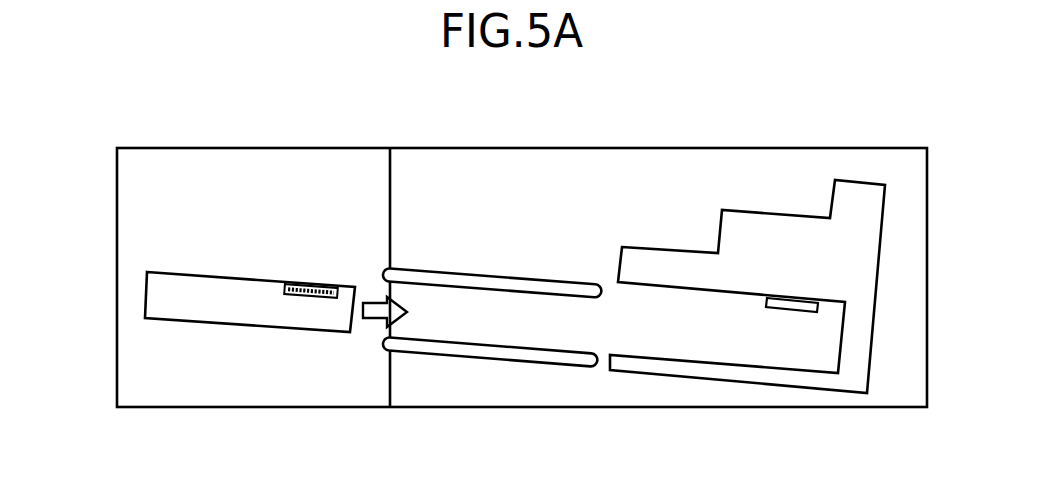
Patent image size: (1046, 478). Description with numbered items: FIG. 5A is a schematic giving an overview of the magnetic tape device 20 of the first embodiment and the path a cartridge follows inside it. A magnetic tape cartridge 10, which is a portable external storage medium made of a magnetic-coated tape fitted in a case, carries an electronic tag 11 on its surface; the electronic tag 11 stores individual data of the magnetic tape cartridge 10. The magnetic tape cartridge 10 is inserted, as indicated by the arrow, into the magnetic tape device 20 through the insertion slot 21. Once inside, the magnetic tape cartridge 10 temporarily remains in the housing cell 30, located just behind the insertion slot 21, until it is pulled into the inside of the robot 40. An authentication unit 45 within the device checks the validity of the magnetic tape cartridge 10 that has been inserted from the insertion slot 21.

The magnetic tape cartridge 10 is at (250, 316).
The electronic tag 11 is at (310, 285).
The magnetic tape device 20 is at (389, 170).
The insertion slot 21 is at (377, 300).
The housing cell 30 is at (488, 320).
The robot 40 is at (645, 258).
The authentication unit 45 is at (780, 302).